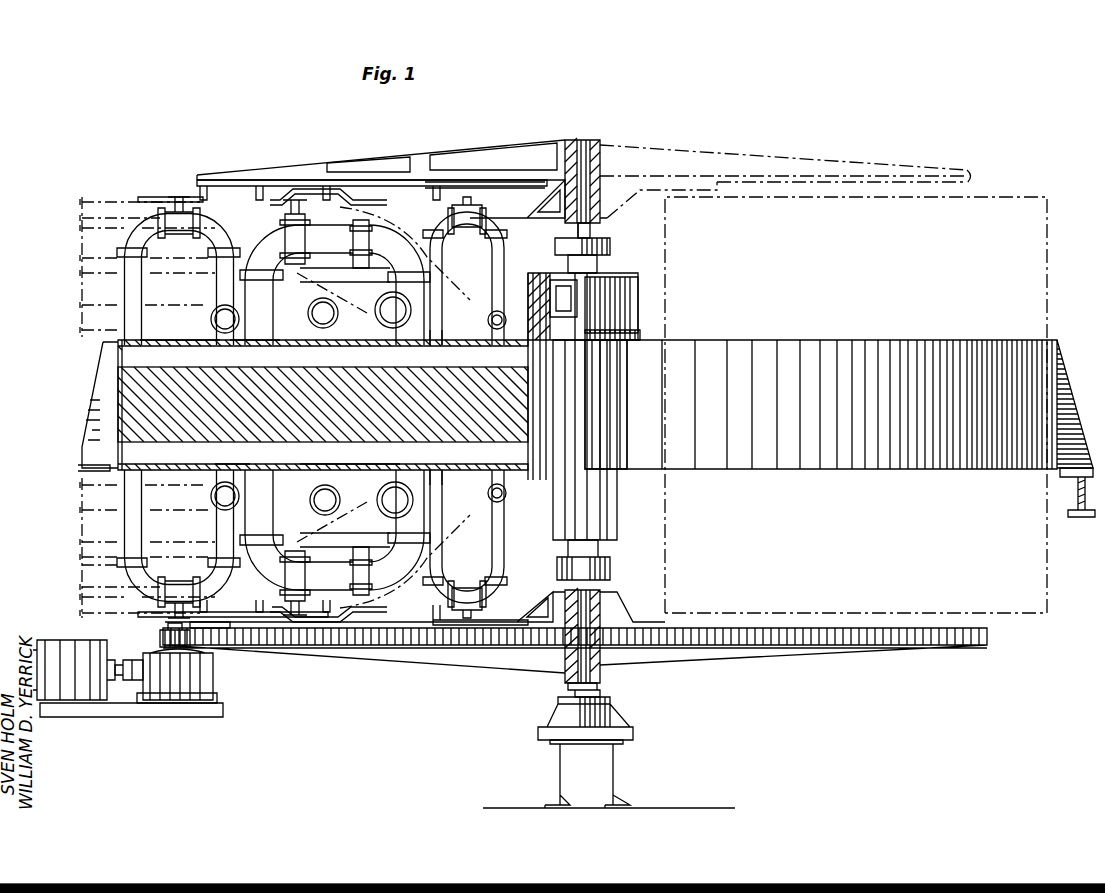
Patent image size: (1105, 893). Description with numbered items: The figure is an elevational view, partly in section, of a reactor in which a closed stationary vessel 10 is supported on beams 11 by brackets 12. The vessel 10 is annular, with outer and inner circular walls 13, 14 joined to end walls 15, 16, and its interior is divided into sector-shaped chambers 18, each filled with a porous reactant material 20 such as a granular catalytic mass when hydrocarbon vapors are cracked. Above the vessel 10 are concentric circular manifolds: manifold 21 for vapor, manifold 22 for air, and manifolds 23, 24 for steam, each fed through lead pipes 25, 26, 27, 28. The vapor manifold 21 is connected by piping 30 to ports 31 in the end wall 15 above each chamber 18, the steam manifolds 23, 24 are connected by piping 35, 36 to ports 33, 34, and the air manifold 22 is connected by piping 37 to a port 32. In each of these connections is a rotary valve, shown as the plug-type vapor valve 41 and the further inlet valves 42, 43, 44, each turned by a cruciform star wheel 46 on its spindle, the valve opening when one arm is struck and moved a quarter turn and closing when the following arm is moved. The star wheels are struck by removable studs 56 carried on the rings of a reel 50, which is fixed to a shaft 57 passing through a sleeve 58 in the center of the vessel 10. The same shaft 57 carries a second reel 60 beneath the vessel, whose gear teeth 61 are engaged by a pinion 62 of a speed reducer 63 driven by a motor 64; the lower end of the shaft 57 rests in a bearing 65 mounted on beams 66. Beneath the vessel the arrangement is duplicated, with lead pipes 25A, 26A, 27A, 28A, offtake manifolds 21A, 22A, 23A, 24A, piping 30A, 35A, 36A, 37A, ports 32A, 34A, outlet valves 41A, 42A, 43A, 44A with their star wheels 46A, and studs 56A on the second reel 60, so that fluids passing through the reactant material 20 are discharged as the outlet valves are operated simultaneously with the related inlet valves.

The closed stationary vessel 10 is at (885, 462).
The beams 11 is at (1080, 517).
The brackets 12 is at (1075, 404).
The outer circular wall 13 is at (110, 412).
The inner circular wall 14 is at (530, 445).
The end wall 15 is at (345, 340).
The end wall 16 is at (380, 466).
The sector-shaped chambers 18 is at (172, 346).
The porous reactant material 20 is at (135, 390).
The vapor manifold 21 is at (210, 319).
The air manifold 22 is at (393, 310).
The steam manifold 23 is at (323, 313).
The steam manifold 24 is at (487, 319).
The lead pipe 25 is at (80, 328).
The lead pipe 26 is at (80, 287).
The lead pipe 27 is at (80, 242).
The lead pipe 28 is at (389, 232).
The piping 30 is at (218, 288).
The ports 31 is at (120, 352).
The port 32 is at (272, 350).
The port 33 is at (240, 466).
The port 34 is at (440, 346).
The piping 35 is at (385, 276).
The piping 36 is at (500, 270).
The piping 37 is at (378, 195).
The vapor valve 41 is at (179, 225).
The inlet valve 42 is at (362, 218).
The inlet valve 43 is at (290, 212).
The inlet valve 44 is at (467, 224).
The star wheel 46 is at (190, 196).
The reel 50 is at (631, 149).
The studs 56 is at (260, 182).
The shaft 57 is at (575, 535).
The sleeve 58 is at (552, 532).
The second reel 60 is at (520, 660).
The gear teeth 61 is at (285, 650).
The pinion 62 is at (158, 634).
The speed reducer 63 is at (205, 680).
The motor 64 is at (60, 655).
The bearing 65 is at (610, 703).
The beams 66 is at (620, 770).
The offtake manifold 21A is at (210, 497).
The offtake manifold 22A is at (400, 482).
The offtake manifold 23A is at (325, 484).
The offtake manifold 24A is at (490, 485).
The lead pipe 25A is at (80, 486).
The lead pipe 26A is at (82, 542).
The lead pipe 27A is at (80, 588).
The lead pipe 28A is at (80, 612).
The piping 30A is at (125, 540).
The port 32A is at (278, 510).
The port 34A is at (427, 442).
The piping 35A is at (385, 536).
The piping 36A is at (446, 525).
The piping 37A is at (290, 515).
The outlet valve 41A is at (178, 570).
The outlet valve 42A is at (360, 610).
The outlet valve 43A is at (300, 615).
The outlet valve 44A is at (465, 585).
The star wheel 46A is at (140, 615).
The studs 56A is at (256, 626).